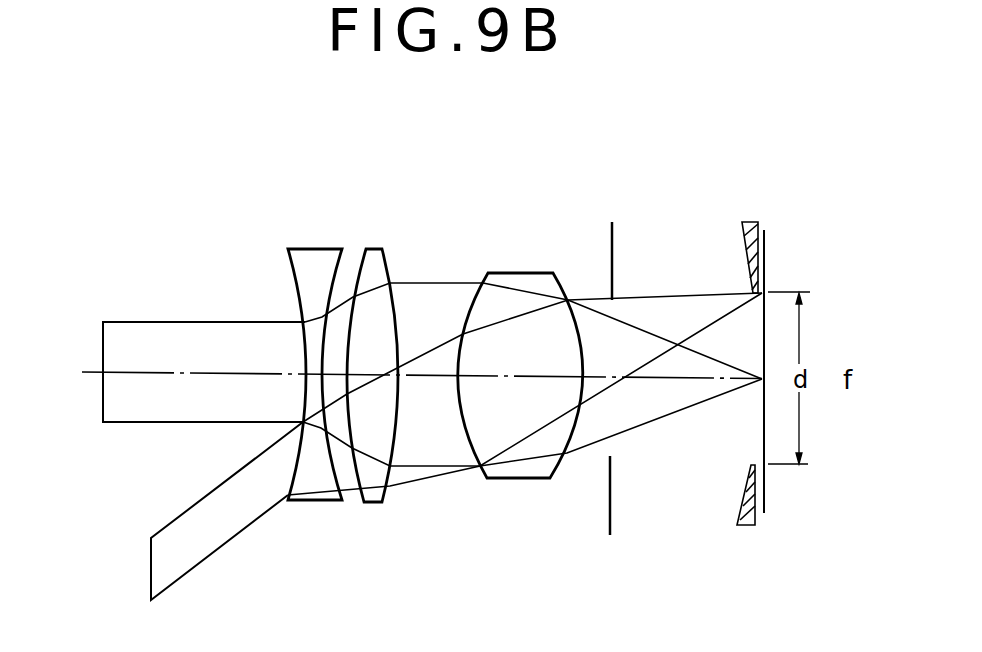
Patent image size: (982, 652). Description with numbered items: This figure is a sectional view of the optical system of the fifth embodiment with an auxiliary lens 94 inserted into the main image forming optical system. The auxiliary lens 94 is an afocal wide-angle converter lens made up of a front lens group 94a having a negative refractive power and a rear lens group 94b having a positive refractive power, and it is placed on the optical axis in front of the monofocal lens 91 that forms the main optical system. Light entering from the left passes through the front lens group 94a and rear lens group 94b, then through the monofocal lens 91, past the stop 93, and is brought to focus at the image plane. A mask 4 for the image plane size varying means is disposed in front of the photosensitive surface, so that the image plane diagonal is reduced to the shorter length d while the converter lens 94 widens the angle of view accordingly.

The mask 4 is at (743, 249).
The monofocal lens 91 is at (514, 272).
The aperture stop 93 is at (613, 243).
The auxiliary lens 94 is at (338, 377).
The front lens group 94a is at (308, 248).
The rear lens group 94b is at (374, 248).